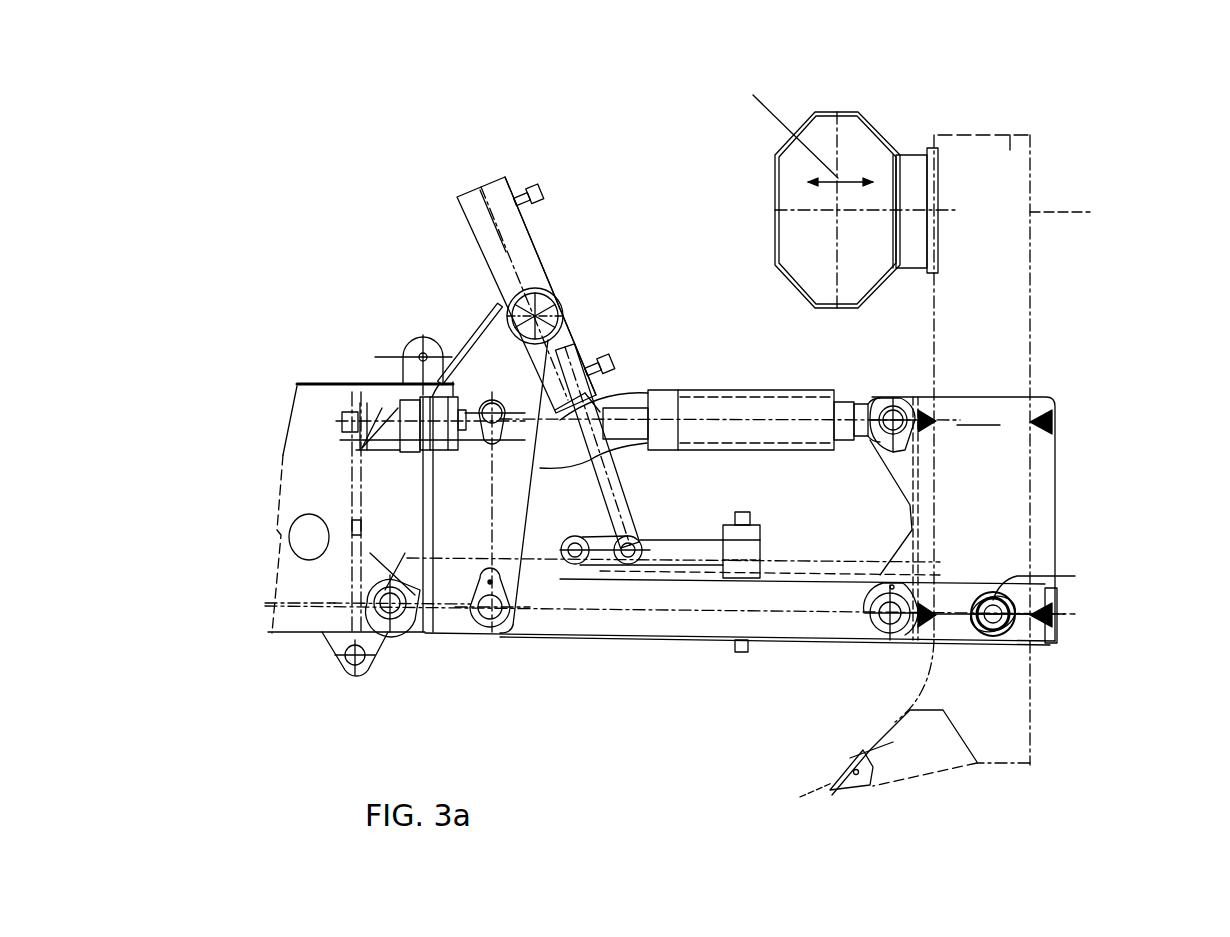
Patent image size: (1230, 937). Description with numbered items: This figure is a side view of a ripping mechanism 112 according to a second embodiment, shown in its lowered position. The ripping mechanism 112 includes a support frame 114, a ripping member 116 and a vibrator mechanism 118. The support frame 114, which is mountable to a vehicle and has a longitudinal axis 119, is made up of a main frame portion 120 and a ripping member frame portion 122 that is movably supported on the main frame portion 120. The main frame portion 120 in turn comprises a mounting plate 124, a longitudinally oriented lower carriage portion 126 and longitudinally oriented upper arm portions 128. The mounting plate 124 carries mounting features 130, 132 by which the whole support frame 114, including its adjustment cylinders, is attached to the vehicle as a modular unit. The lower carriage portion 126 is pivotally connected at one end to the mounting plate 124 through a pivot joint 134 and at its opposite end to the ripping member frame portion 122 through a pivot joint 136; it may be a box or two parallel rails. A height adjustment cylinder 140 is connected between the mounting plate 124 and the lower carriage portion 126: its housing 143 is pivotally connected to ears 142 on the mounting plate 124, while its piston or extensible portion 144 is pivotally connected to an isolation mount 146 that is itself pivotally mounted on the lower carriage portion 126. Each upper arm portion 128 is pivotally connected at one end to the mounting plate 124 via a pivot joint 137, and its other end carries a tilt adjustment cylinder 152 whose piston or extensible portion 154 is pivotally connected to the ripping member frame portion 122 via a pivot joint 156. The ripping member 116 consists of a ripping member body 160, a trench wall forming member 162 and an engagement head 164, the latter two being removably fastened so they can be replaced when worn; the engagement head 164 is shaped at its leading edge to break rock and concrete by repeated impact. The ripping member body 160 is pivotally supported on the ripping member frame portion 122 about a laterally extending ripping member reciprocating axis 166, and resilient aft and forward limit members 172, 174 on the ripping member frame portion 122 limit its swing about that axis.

The ripping mechanism 112 is at (1085, 122).
The support frame 114 is at (616, 654).
The ripping member 116 is at (1010, 303).
The vibrator mechanism 118 is at (855, 145).
The longitudinal axis 119 is at (573, 612).
The main frame portion 120 is at (683, 630).
The ripping member frame portion 122 is at (1068, 495).
The mounting plate 124 is at (500, 478).
The lower carriage portion 126 is at (788, 627).
The upper arm portion 128 is at (626, 393).
The mounting feature 130 is at (388, 413).
The mounting feature 132 is at (400, 617).
The pivot joint 134 is at (490, 617).
The pivot joint 136 is at (880, 625).
The pivot joint 137 is at (490, 400).
The height adjustment cylinder 140 is at (497, 187).
The ear 142 is at (500, 305).
The height adjustment cylinder housing 143 is at (542, 263).
The extensible portion 144 is at (623, 500).
The isolation mount 146 is at (685, 540).
The tilt adjustment cylinder 152 is at (718, 403).
The extensible portion 154 is at (832, 400).
The pivot joint 156 is at (888, 405).
The ripping member body 160 is at (1010, 147).
The trench wall forming member 162 is at (927, 768).
The engagement head 164 is at (818, 792).
The ripping member reciprocating axis 166 is at (1007, 647).
The aft limit member 172 is at (1052, 422).
The forward limit member 174 is at (938, 417).